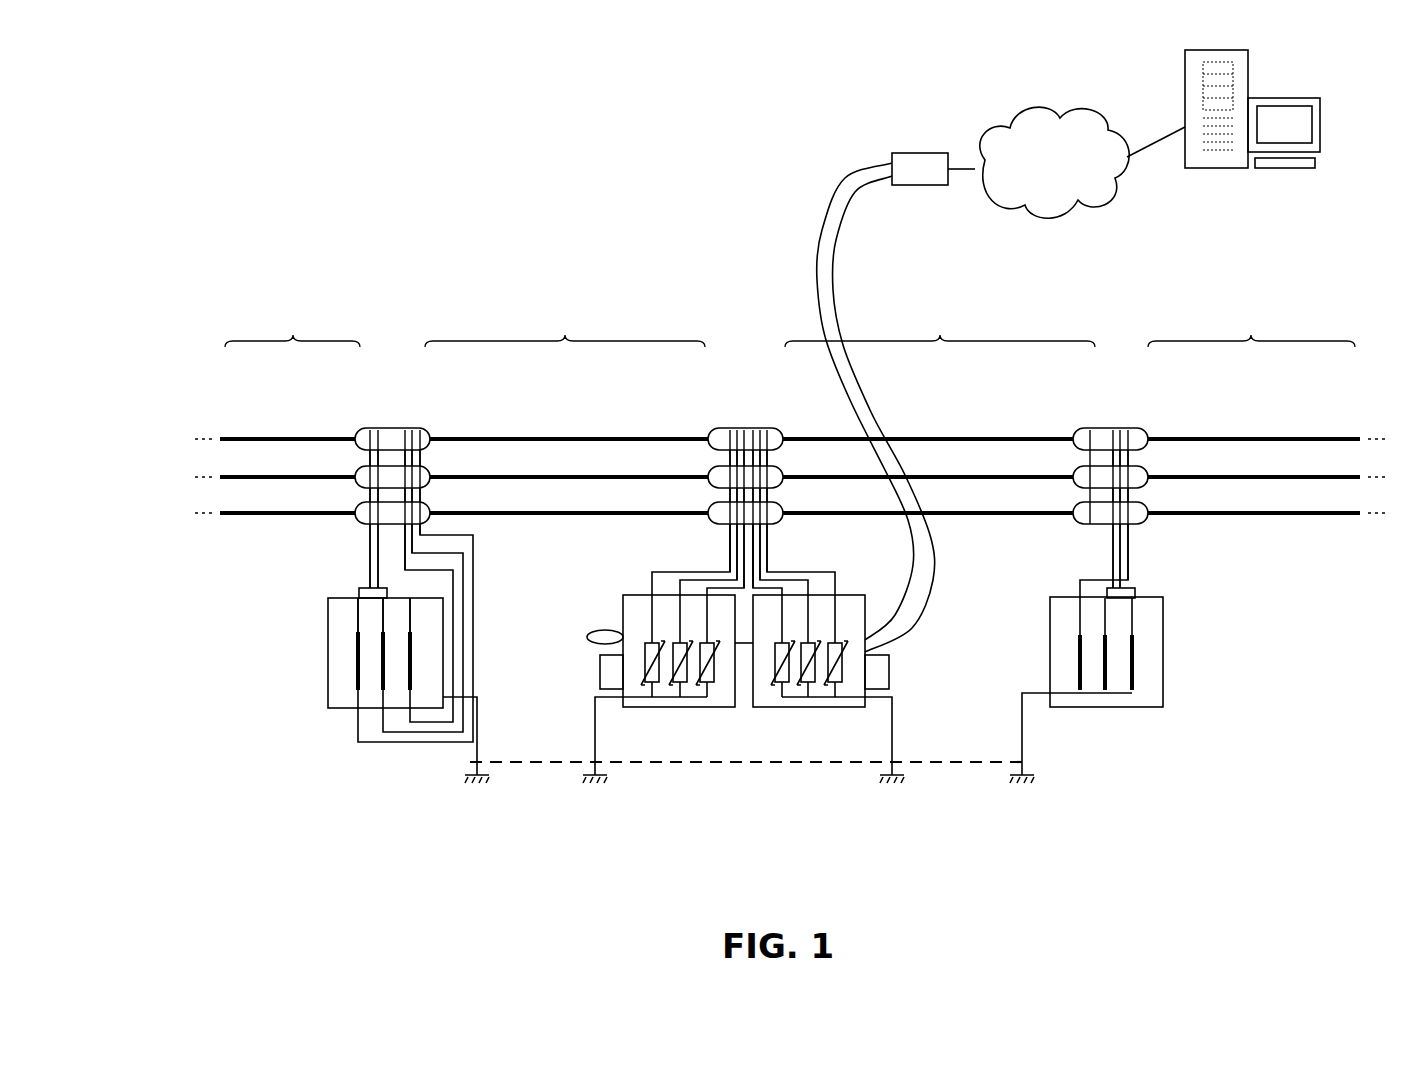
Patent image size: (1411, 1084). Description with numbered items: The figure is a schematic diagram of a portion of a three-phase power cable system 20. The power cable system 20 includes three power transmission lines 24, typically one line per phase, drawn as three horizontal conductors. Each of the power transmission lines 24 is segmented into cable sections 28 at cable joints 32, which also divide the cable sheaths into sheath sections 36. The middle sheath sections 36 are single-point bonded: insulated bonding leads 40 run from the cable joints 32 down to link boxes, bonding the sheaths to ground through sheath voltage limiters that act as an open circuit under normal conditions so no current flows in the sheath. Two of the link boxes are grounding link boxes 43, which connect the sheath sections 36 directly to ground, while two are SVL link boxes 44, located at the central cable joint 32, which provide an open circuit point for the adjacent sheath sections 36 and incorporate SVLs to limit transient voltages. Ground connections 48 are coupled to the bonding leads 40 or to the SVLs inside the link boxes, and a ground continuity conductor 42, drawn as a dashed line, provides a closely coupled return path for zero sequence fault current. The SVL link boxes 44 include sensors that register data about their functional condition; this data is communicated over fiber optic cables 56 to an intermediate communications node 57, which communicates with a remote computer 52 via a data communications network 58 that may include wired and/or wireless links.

The power cable system 20 is at (150, 335).
The power transmission lines 24 is at (140, 420).
The cable sections 28 is at (790, 328).
The cable joints 32 is at (410, 428).
The sheath sections 36 is at (312, 513).
The insulated bonding leads 40 is at (368, 545).
The ground continuity conductor 42 is at (768, 765).
The grounding link boxes 43 is at (350, 596).
The SVL link boxes 44 is at (634, 595).
The ground connections 48 is at (470, 778).
The computer 52 is at (1260, 98).
The fiber optic cables 56 is at (818, 272).
The intermediate communications node 57 is at (908, 152).
The data communications network 58 is at (1060, 186).